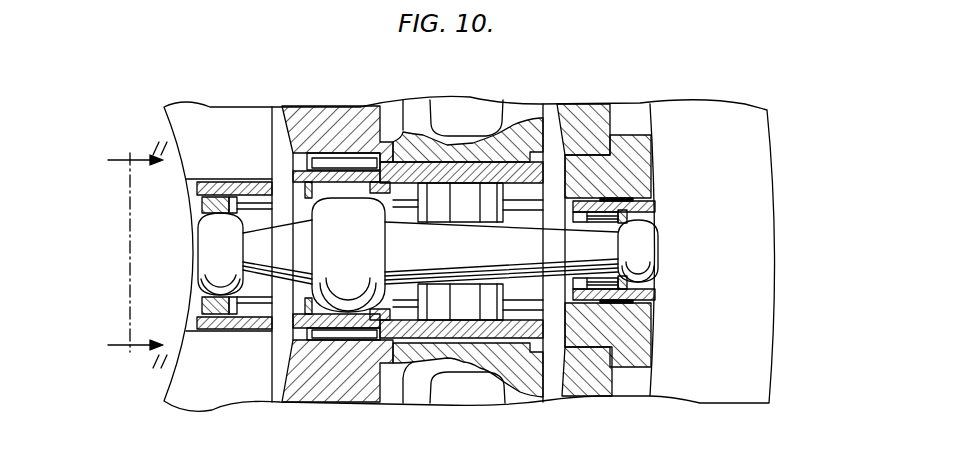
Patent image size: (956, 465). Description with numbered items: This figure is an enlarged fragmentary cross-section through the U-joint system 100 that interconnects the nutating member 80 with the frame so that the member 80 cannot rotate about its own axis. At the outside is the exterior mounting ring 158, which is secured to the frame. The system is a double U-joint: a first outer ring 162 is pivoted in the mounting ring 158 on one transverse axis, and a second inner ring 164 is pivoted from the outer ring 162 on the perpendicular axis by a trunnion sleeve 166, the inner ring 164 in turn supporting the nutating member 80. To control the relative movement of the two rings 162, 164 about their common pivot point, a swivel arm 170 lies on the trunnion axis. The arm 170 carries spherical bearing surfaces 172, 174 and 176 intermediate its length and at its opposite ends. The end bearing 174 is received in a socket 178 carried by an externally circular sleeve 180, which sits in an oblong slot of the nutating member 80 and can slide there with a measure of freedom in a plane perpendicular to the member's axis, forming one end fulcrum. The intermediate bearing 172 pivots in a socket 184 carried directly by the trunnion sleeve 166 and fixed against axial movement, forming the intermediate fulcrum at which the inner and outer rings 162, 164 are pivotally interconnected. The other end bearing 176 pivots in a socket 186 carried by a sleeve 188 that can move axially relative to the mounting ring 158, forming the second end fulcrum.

The nutating member 80 is at (235, 148).
The U-joint system 100 is at (805, 242).
The mounting ring 158 is at (742, 328).
The first outer ring 162 is at (492, 391).
The second inner ring 164 is at (343, 393).
The trunnion sleeve 166 is at (500, 335).
The swivel arm 170 is at (497, 258).
The intermediate spherical bearing 172 is at (368, 261).
The spherical bearing 174 is at (210, 260).
The spherical bearing 176 is at (663, 250).
The socket 178 is at (221, 311).
The sleeve 180 is at (207, 320).
The socket 184 is at (352, 190).
The socket 186 is at (640, 285).
The sleeve 188 is at (642, 303).